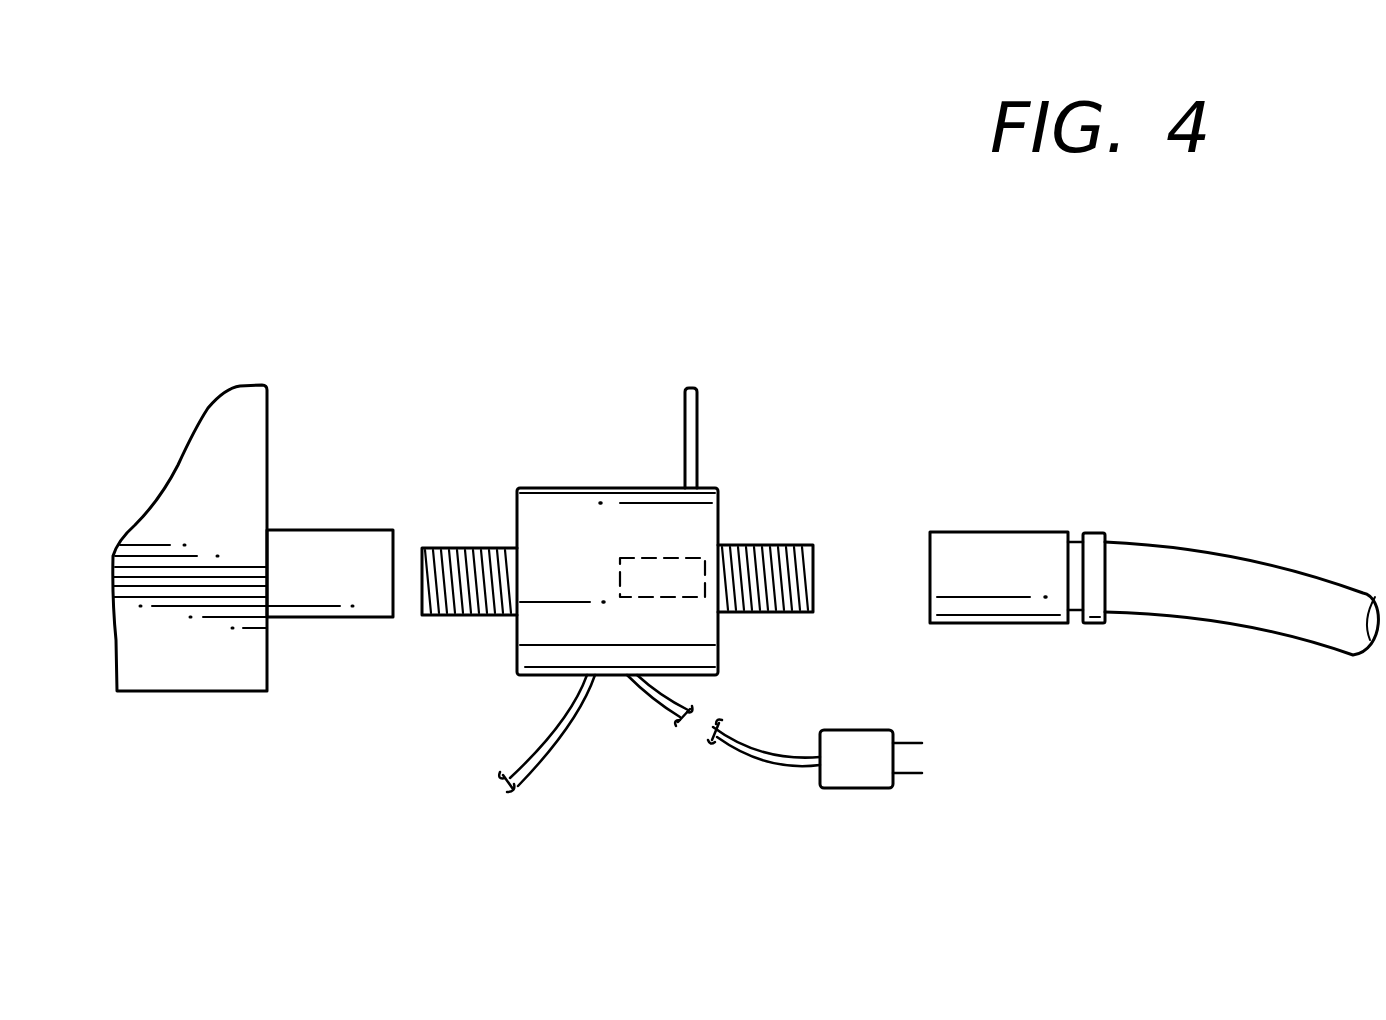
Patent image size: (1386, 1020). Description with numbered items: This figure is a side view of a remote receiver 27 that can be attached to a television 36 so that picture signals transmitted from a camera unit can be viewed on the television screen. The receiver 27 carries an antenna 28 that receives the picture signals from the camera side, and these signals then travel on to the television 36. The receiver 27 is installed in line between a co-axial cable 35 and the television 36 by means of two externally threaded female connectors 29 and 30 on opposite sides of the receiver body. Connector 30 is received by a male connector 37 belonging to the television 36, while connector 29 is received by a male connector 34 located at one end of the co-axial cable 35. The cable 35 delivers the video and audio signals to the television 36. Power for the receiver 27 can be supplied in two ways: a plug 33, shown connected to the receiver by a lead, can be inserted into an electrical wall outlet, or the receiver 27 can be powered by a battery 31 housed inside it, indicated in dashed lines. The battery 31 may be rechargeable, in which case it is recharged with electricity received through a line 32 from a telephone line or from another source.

The remote receiver 27 is at (630, 460).
The antenna 28 is at (697, 408).
The externally threaded female connector 29 is at (755, 545).
The externally threaded female connector 30 is at (463, 548).
The battery 31 is at (620, 590).
The line 32 is at (535, 757).
The plug 33 is at (832, 800).
The male connector 34 is at (987, 532).
The co-axial cable 35 is at (1333, 555).
The television 36 is at (288, 432).
The male connector 37 is at (318, 620).